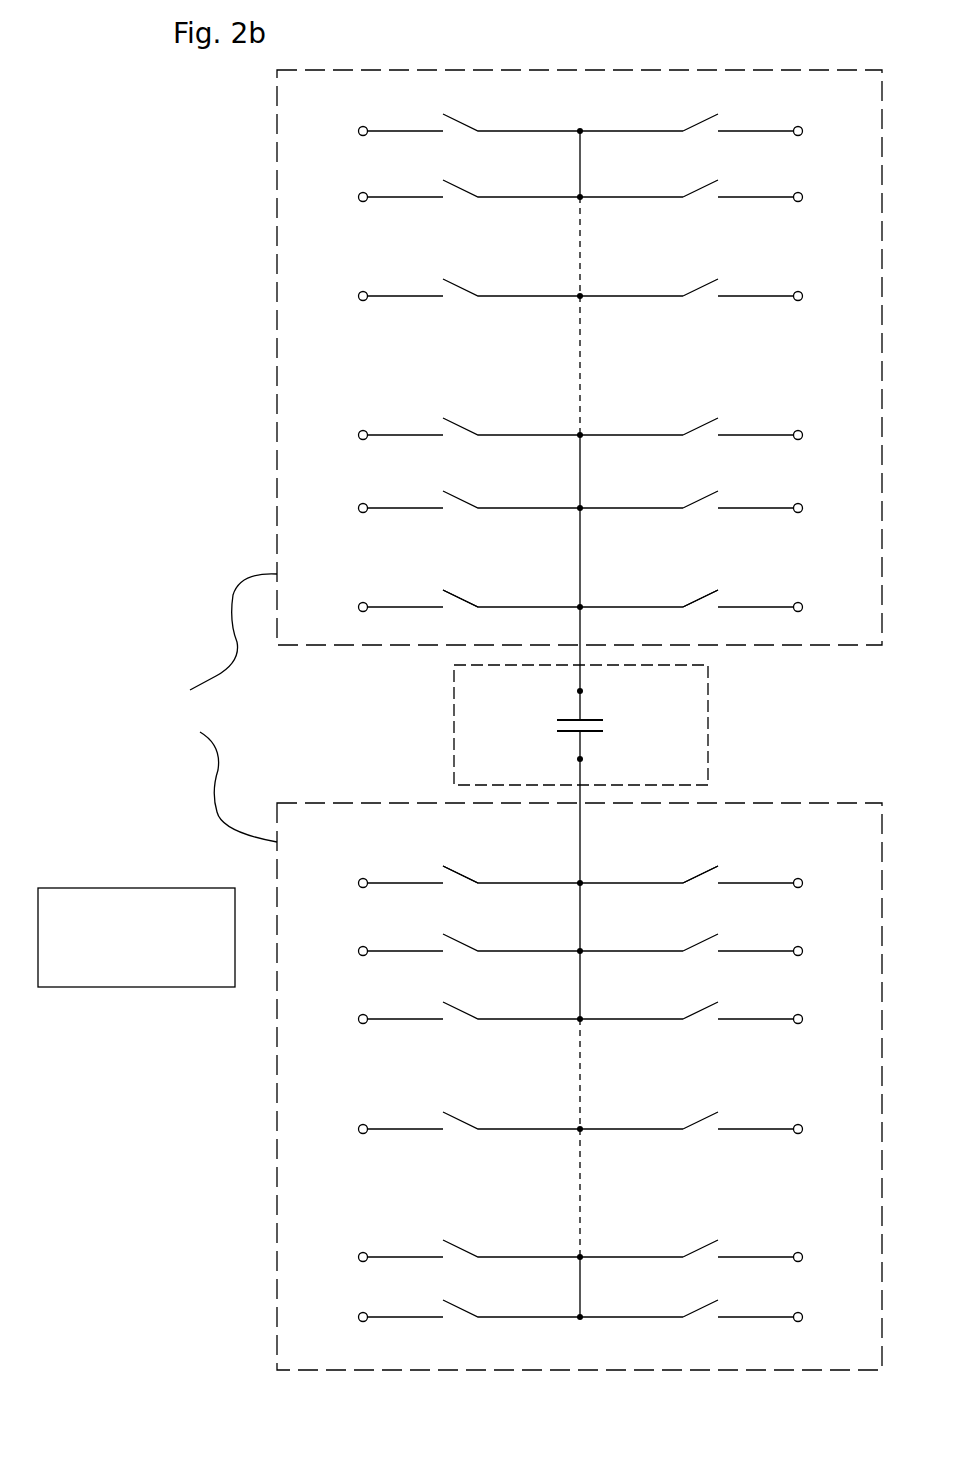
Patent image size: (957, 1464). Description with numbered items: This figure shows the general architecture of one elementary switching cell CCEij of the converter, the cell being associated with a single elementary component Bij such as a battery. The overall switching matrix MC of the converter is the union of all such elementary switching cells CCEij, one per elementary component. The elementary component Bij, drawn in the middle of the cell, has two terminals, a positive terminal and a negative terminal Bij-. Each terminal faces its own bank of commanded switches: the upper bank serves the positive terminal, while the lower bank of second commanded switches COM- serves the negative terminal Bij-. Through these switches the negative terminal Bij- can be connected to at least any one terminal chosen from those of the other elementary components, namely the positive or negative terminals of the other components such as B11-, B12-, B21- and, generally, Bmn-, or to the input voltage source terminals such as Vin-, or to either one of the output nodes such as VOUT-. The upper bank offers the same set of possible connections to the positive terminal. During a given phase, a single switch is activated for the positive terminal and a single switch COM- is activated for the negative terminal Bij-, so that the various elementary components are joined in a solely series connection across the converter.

The negative output node VOUT- is at (723, 719).
The negative input voltage terminal Vin- is at (711, 722).
The negative terminal of another elementary component Bmn- is at (716, 708).
The negative terminal of elementary component B21 B21- is at (713, 722).
The negative terminal of elementary component B12 B12- is at (713, 725).
The negative terminal of elementary component B11 B11- is at (713, 740).
The second commanded switch COM- is at (462, 868).
The elementary component Bij is at (612, 722).
The negative terminal of the elementary component Bij- is at (602, 759).
The elementary switching cell CCEij is at (196, 708).
The overall switching matrix MC is at (136, 937).